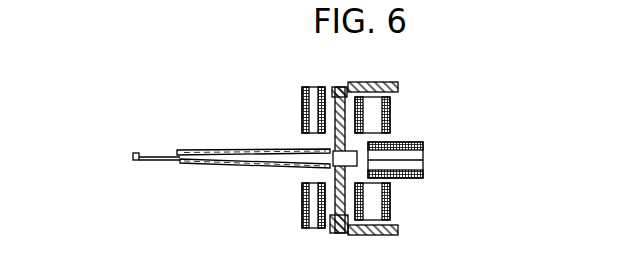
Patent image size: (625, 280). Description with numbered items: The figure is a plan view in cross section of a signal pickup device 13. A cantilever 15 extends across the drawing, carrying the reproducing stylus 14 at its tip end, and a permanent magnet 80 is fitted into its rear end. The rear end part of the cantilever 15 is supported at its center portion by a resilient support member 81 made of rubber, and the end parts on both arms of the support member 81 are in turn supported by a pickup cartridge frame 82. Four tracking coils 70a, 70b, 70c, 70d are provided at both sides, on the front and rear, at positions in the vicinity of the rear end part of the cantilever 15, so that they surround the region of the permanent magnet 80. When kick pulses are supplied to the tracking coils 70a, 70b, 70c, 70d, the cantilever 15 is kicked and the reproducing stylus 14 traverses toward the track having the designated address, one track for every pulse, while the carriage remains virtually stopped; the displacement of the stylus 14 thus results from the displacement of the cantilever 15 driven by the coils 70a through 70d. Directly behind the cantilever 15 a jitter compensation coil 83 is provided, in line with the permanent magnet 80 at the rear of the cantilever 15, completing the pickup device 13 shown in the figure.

The signal pickup device 13 is at (233, 66).
The reproducing stylus 14 is at (133, 153).
The cantilever 15 is at (219, 150).
The tracking coil 70a is at (301, 207).
The tracking coil 70b is at (301, 97).
The tracking coil 70c is at (392, 216).
The tracking coil 70d is at (392, 108).
The permanent magnet 80 is at (424, 170).
The resilient support member 81 is at (331, 172).
The pickup cartridge frame 82 is at (382, 82).
The jitter compensation coil 83 is at (425, 143).